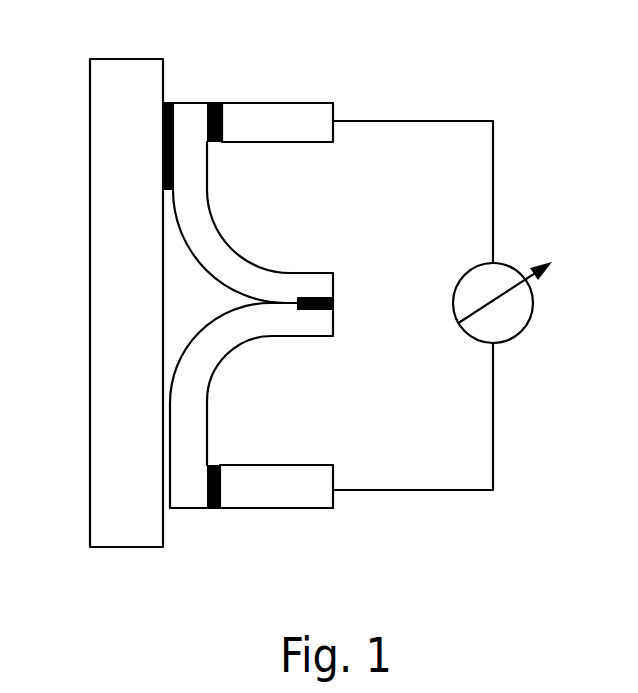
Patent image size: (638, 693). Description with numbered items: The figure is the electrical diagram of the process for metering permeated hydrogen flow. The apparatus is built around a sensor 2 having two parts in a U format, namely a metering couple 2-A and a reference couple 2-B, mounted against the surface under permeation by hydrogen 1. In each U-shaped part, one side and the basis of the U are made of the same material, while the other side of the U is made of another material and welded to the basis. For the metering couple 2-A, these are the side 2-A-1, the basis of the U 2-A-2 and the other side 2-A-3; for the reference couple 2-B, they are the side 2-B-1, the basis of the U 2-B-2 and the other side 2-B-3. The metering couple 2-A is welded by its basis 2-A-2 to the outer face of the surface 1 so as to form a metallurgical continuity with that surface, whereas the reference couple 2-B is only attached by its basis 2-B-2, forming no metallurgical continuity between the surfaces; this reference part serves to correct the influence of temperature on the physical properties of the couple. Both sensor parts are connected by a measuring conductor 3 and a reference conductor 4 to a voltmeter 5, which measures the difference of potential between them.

The surface under permeation by hydrogen 1 is at (107, 78).
The sensor 2 is at (335, 113).
The metering couple 2-A is at (264, 167).
The side of the U of the metering couple 2-A-1 is at (267, 273).
The basis of the U of the metering couple 2-A-2 is at (185, 117).
The other side of the U of the metering couple 2-A-3 is at (275, 115).
The reference couple 2-B is at (280, 452).
The side of the U of the reference couple 2-B-1 is at (253, 328).
The basis of the U of the reference couple 2-B-2 is at (185, 488).
The other side of the U of the reference couple 2-B-3 is at (283, 490).
The measuring conductor 3 is at (468, 121).
The reference conductor 4 is at (438, 490).
The voltmeter 5 is at (495, 318).